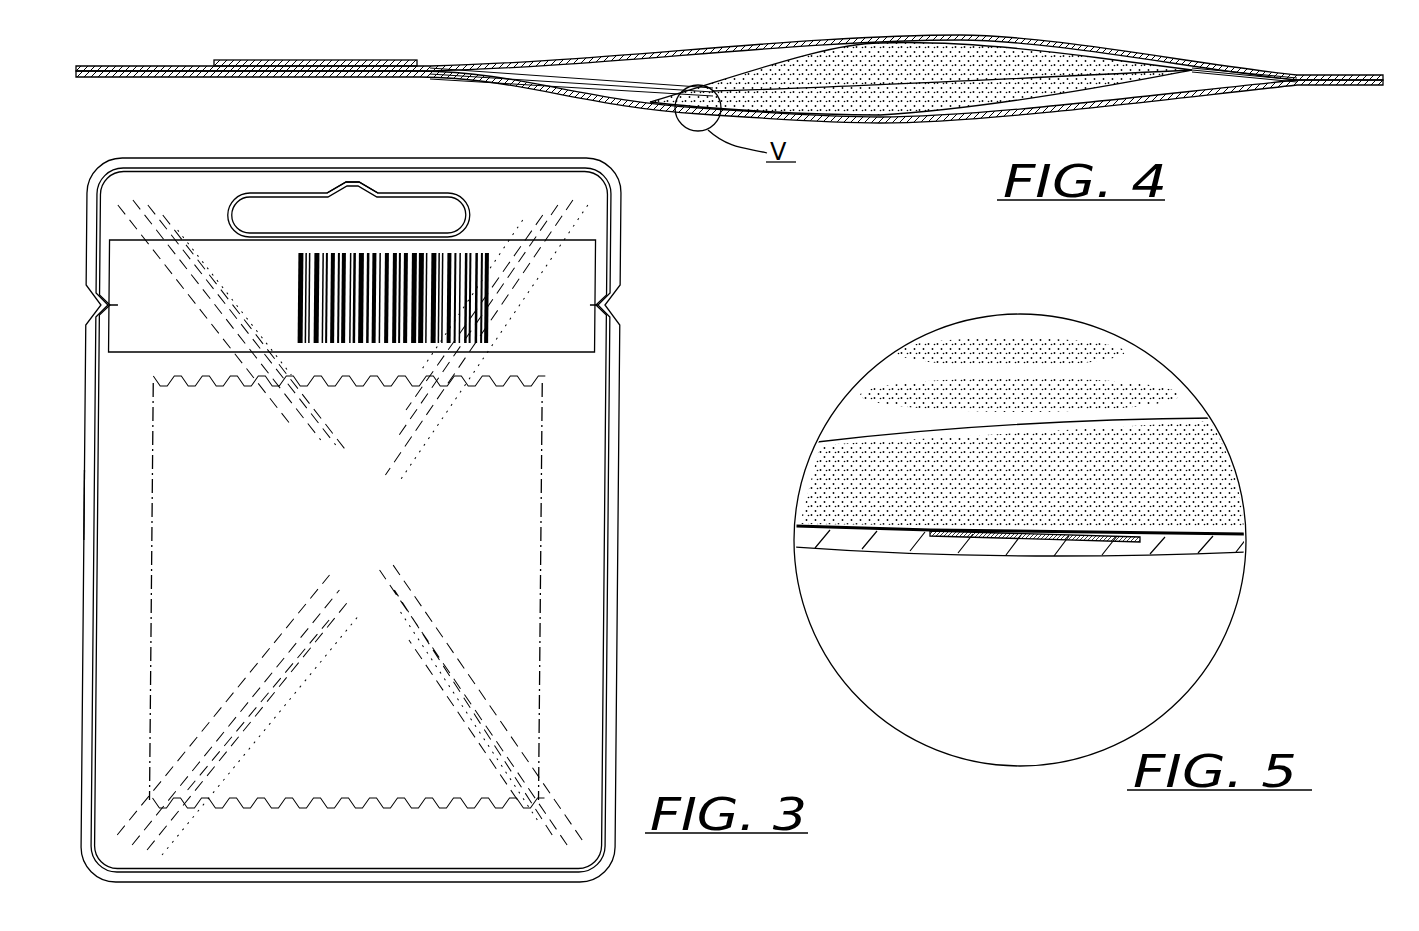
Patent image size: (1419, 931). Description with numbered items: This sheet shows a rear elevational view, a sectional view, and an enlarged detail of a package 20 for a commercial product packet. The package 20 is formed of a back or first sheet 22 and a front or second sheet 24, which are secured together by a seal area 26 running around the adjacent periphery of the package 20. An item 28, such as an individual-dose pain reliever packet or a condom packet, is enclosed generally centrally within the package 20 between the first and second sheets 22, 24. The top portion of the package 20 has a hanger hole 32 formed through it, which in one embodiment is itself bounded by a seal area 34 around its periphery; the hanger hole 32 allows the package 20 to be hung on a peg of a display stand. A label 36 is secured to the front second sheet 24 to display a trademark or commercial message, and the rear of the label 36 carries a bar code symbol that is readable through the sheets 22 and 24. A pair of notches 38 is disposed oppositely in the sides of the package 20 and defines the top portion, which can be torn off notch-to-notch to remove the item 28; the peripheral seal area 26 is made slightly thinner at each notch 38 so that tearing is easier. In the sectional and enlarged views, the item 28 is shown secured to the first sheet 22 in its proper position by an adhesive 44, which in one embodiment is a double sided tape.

In FIG. 3, the package 20 is at (653, 650).
In FIG. 4, the first sheet 22 is at (140, 78).
In FIG. 3, the first sheet 22 is at (132, 442).
In FIG. 5, the first sheet 22 is at (890, 548).
In FIG. 4, the second sheet 24 is at (180, 65).
In FIG. 3, the second sheet 24 is at (138, 412).
In FIG. 3, the seal area 26 is at (88, 505).
In FIG. 4, the item 28 is at (820, 80).
In FIG. 3, the item 28 is at (468, 515).
In FIG. 5, the item 28 is at (1087, 487).
In FIG. 3, the hanger hole 32 is at (293, 220).
In FIG. 3, the seal area 34 is at (307, 193).
In FIG. 4, the label 36 is at (260, 62).
In FIG. 3, the label 36 is at (573, 283).
In FIG. 3, the notches 38 is at (101, 305).
In FIG. 5, the adhesive 44 is at (967, 543).